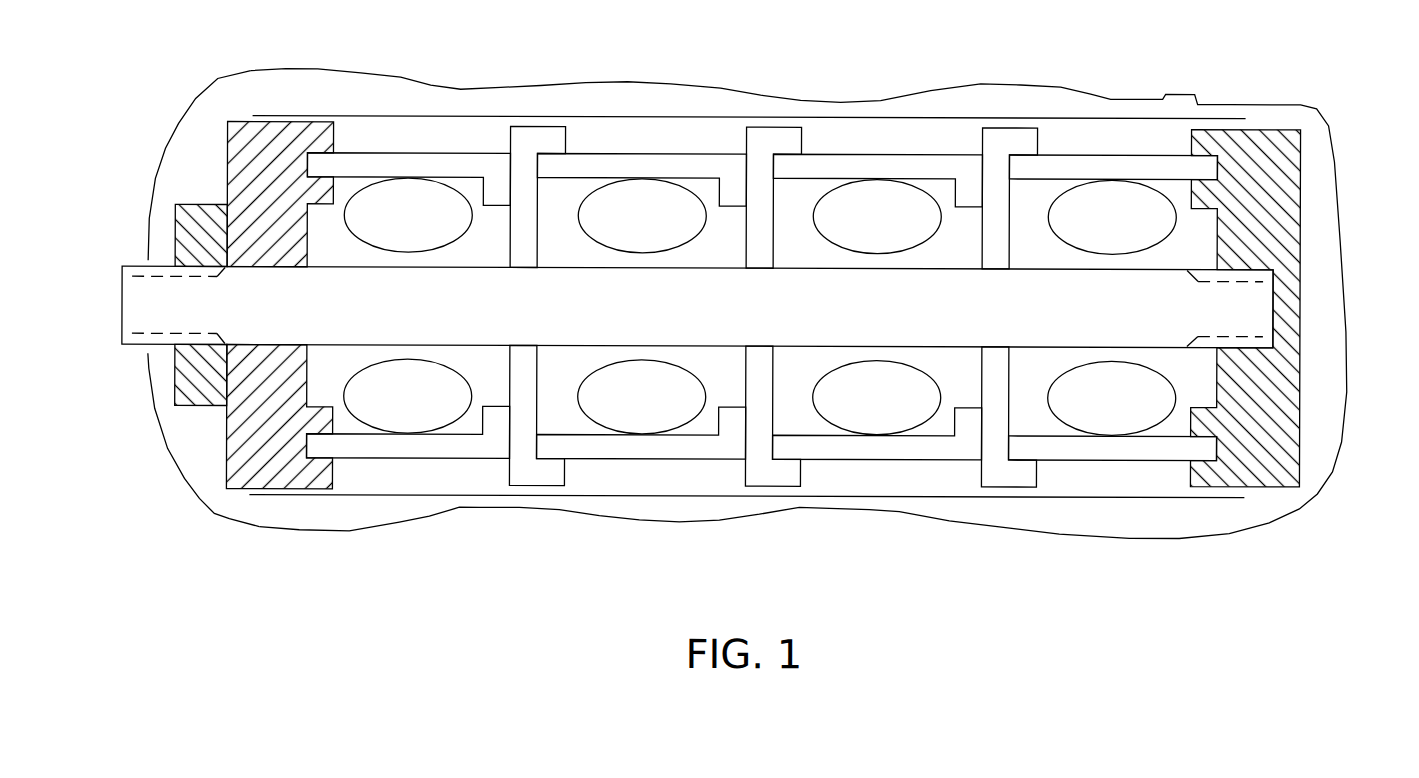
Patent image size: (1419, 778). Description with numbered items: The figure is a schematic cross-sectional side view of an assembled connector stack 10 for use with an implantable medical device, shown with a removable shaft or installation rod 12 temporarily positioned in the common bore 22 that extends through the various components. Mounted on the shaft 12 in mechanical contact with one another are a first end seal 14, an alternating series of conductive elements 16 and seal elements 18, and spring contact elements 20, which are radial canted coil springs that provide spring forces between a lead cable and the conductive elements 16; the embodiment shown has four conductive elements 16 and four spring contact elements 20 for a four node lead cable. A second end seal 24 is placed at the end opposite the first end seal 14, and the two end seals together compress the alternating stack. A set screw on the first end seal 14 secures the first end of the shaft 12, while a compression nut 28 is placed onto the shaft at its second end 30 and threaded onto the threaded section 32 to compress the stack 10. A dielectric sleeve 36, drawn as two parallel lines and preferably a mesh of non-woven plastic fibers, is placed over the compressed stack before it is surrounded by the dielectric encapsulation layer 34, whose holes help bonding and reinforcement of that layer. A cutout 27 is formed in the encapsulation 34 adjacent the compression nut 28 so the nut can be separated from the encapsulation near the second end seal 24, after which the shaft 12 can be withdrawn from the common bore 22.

The connector stack 10 is at (187, 499).
The removable shaft 12 is at (1235, 331).
The first end seal 14 is at (1305, 177).
The conductive elements 16 is at (661, 147).
The seal elements 18 is at (527, 144).
The spring contact elements 20 is at (663, 420).
The common bore 22 is at (265, 280).
The second end seal 24 is at (228, 148).
The cutout 27 is at (143, 386).
The compression nut 28 is at (200, 205).
The second end of the shaft 30 is at (122, 303).
The threaded section 32 is at (122, 334).
The encapsulation layer 34 is at (465, 508).
The dielectric sleeve 36 is at (1144, 501).